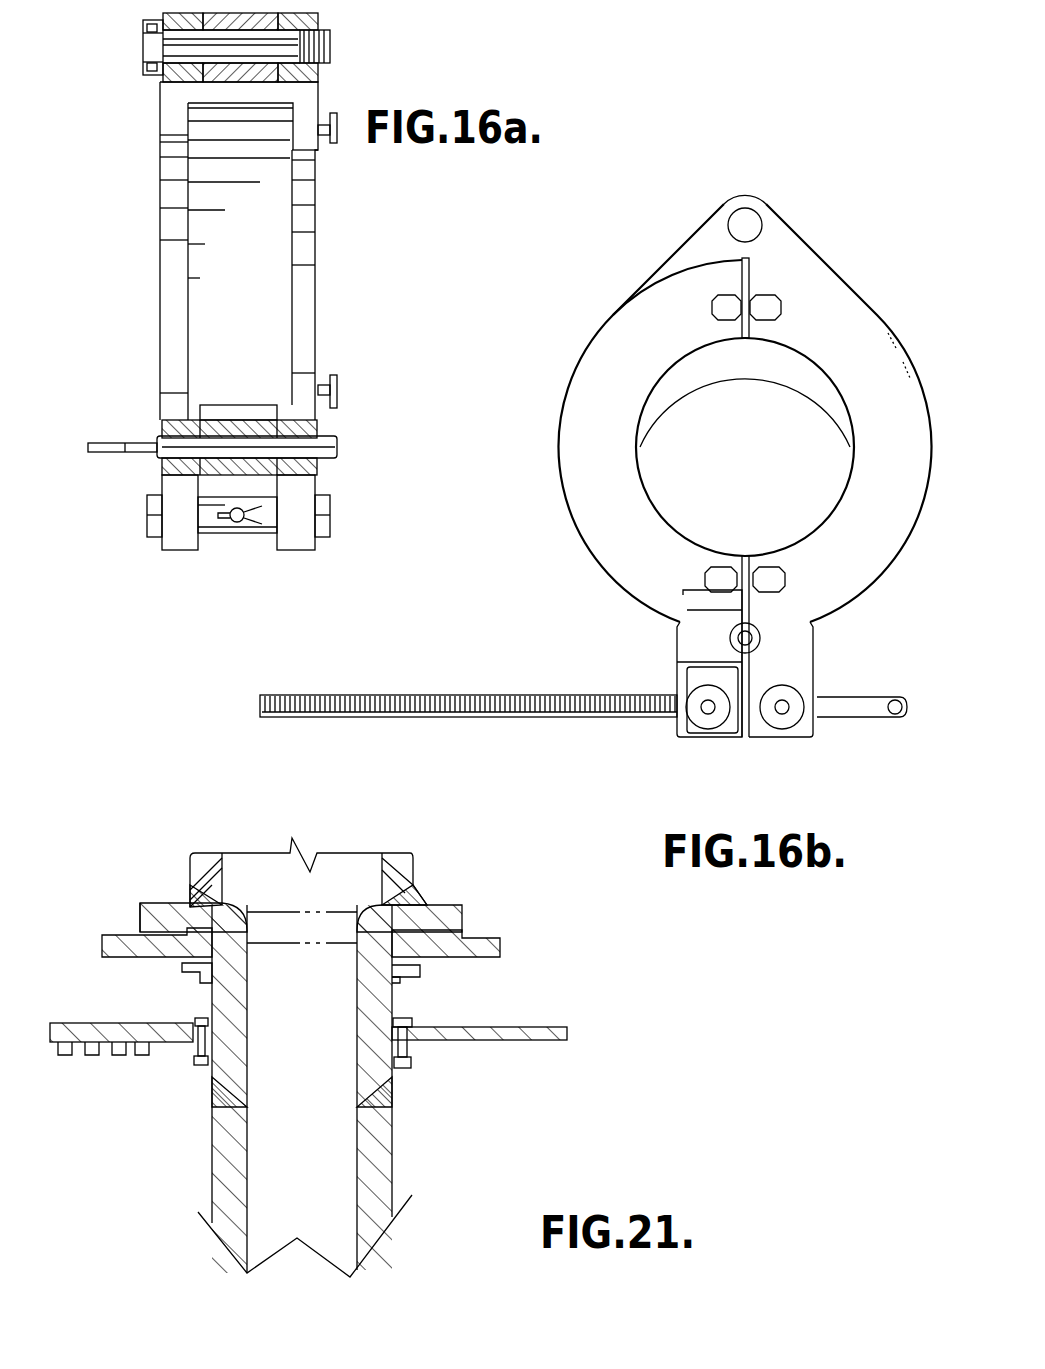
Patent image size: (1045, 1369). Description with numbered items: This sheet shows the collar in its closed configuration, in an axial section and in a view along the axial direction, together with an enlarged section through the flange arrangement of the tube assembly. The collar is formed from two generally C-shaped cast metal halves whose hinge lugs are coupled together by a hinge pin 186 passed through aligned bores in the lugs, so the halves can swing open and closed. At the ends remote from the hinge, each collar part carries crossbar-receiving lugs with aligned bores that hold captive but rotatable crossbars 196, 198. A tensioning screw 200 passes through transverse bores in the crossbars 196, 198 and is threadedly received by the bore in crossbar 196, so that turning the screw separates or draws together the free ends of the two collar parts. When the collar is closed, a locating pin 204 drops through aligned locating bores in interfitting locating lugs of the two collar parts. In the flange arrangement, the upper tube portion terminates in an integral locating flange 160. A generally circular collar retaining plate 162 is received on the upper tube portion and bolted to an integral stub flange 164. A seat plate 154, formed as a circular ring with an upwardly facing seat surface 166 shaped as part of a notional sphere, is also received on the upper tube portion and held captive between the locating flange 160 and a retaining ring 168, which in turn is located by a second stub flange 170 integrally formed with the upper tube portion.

In FIG. 16A, the hinge pin 186 is at (330, 57).
In FIG. 16B, the hinge pin 186 is at (745, 225).
In FIG. 16A, the locating pin 204 is at (338, 450).
In FIG. 16A, the crossbar 198 is at (335, 515).
In FIG. 16B, the crossbar 198 is at (782, 712).
In FIG. 16B, the crossbar 196 is at (708, 712).
In FIG. 16B, the tensioning screw 200 is at (397, 695).
In FIG. 21, the seat plate 154 is at (102, 945).
In FIG. 21, the locating flange 160 is at (462, 920).
In FIG. 21, the seat surface 166 is at (435, 928).
In FIG. 21, the retaining ring 168 is at (418, 972).
In FIG. 21, the second stub flange 170 is at (398, 980).
In FIG. 21, the collar retaining plate 162 is at (567, 1032).
In FIG. 21, the stub flange 164 is at (412, 1047).